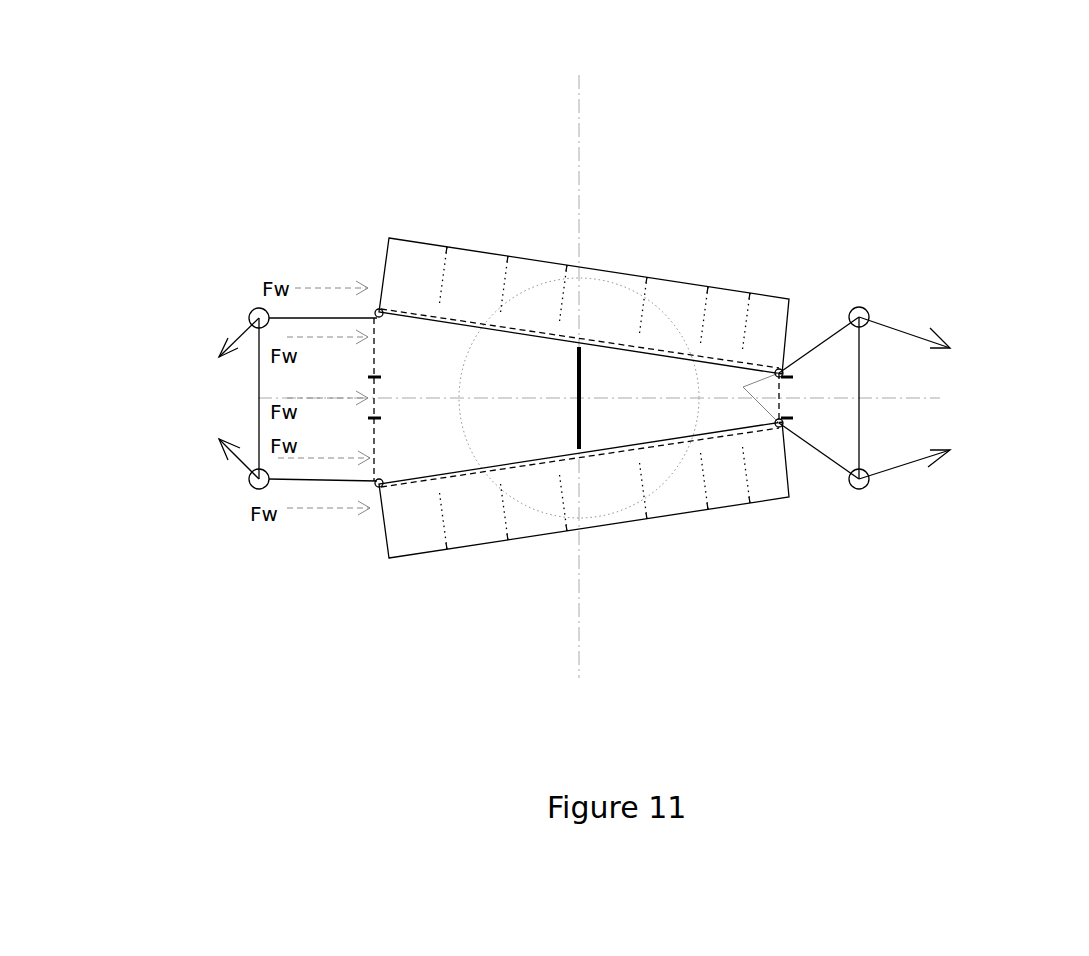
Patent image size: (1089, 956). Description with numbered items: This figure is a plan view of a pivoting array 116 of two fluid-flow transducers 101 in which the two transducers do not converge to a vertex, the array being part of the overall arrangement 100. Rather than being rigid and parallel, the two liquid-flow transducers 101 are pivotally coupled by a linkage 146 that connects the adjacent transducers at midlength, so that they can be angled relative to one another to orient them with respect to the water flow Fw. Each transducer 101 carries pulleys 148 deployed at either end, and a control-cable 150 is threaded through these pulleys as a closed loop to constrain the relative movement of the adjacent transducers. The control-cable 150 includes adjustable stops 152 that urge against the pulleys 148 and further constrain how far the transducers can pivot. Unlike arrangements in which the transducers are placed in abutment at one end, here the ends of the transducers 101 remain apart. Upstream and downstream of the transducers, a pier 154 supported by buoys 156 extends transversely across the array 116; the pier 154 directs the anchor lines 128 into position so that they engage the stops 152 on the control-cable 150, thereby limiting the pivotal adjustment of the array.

The wind energy system 100 is at (908, 166).
The fluid-flow transducer 101 is at (383, 217).
The array 116 is at (288, 205).
The anchor line 128 is at (212, 348).
The linkage 146 is at (566, 390).
The pulley 148 is at (380, 323).
The control-cable 150 is at (390, 493).
The adjustable stop 152 is at (381, 371).
The pier 154 is at (253, 383).
The buoy 156 is at (252, 308).